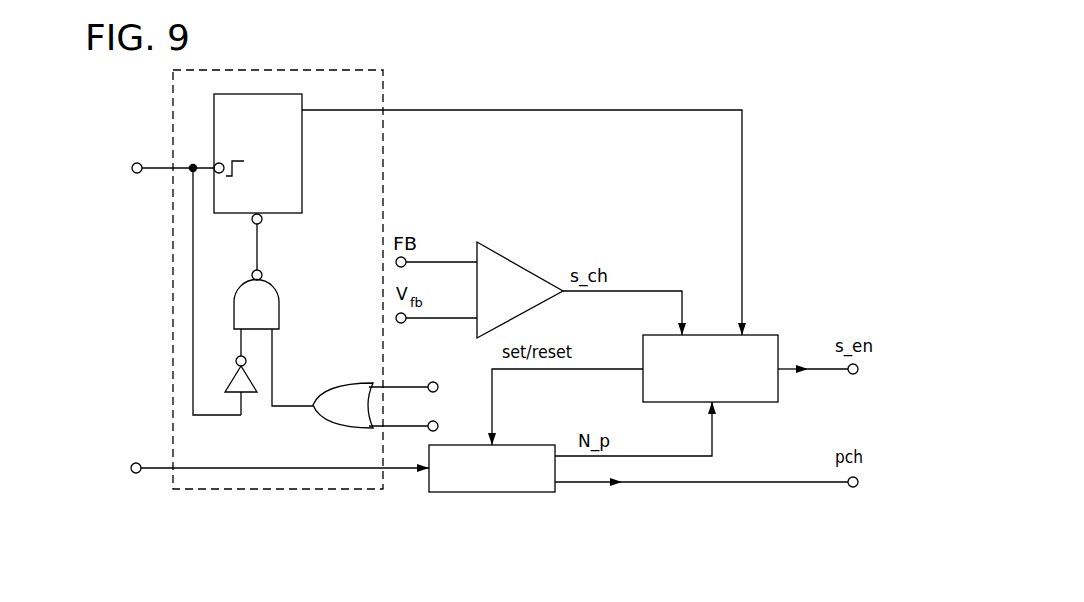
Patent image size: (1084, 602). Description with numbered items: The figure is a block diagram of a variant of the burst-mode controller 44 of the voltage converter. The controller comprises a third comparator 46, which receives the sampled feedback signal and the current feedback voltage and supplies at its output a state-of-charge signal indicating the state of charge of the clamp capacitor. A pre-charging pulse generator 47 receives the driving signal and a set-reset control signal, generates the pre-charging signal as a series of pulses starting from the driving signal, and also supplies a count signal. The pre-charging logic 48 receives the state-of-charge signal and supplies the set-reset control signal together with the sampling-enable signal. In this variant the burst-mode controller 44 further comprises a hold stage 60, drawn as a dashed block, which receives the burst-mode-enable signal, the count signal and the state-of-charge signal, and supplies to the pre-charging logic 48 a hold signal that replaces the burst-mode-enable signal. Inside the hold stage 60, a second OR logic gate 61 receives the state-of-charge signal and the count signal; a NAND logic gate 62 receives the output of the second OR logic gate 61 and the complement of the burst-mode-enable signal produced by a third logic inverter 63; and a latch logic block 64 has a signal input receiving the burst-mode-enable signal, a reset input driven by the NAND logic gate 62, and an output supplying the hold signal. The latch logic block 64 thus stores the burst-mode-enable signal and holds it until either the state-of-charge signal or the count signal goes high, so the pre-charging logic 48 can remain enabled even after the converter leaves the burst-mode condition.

The burst-mode controller 44 is at (136, 232).
The hold stage 60 is at (394, 82).
The latch logic block 64 is at (302, 177).
The NAND logic gate 62 is at (278, 290).
The third logic inverter 63 is at (246, 393).
The second OR logic gate 61 is at (350, 382).
The third comparator 46 is at (523, 263).
The pre-charging pulse generator 47 is at (517, 445).
The pre-charging logic 48 is at (760, 335).